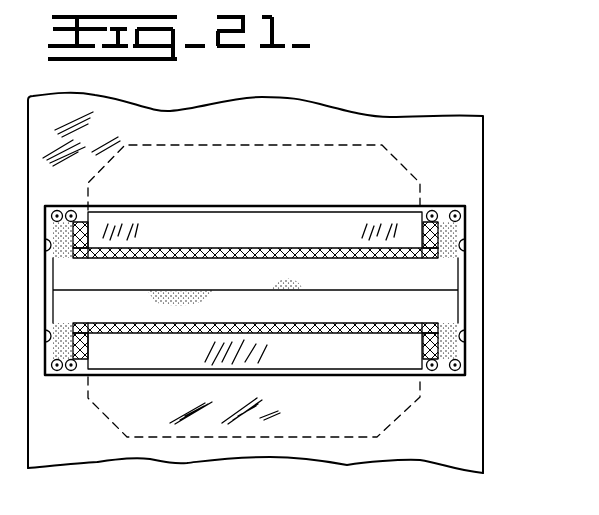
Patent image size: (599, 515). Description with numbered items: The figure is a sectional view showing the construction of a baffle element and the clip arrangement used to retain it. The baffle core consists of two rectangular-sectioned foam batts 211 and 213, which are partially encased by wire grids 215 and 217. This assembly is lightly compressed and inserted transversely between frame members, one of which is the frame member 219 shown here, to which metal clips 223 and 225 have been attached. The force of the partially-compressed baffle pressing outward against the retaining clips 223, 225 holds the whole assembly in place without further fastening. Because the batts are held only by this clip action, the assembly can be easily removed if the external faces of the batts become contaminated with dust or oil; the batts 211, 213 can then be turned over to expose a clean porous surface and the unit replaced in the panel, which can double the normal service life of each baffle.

The foam batt 211 is at (222, 284).
The foam batt 213 is at (320, 320).
The wire grid 215 is at (82, 211).
The wire grid 217 is at (82, 372).
The frame member 219 is at (470, 134).
The metal clip 223 is at (403, 222).
The metal clip 225 is at (125, 362).